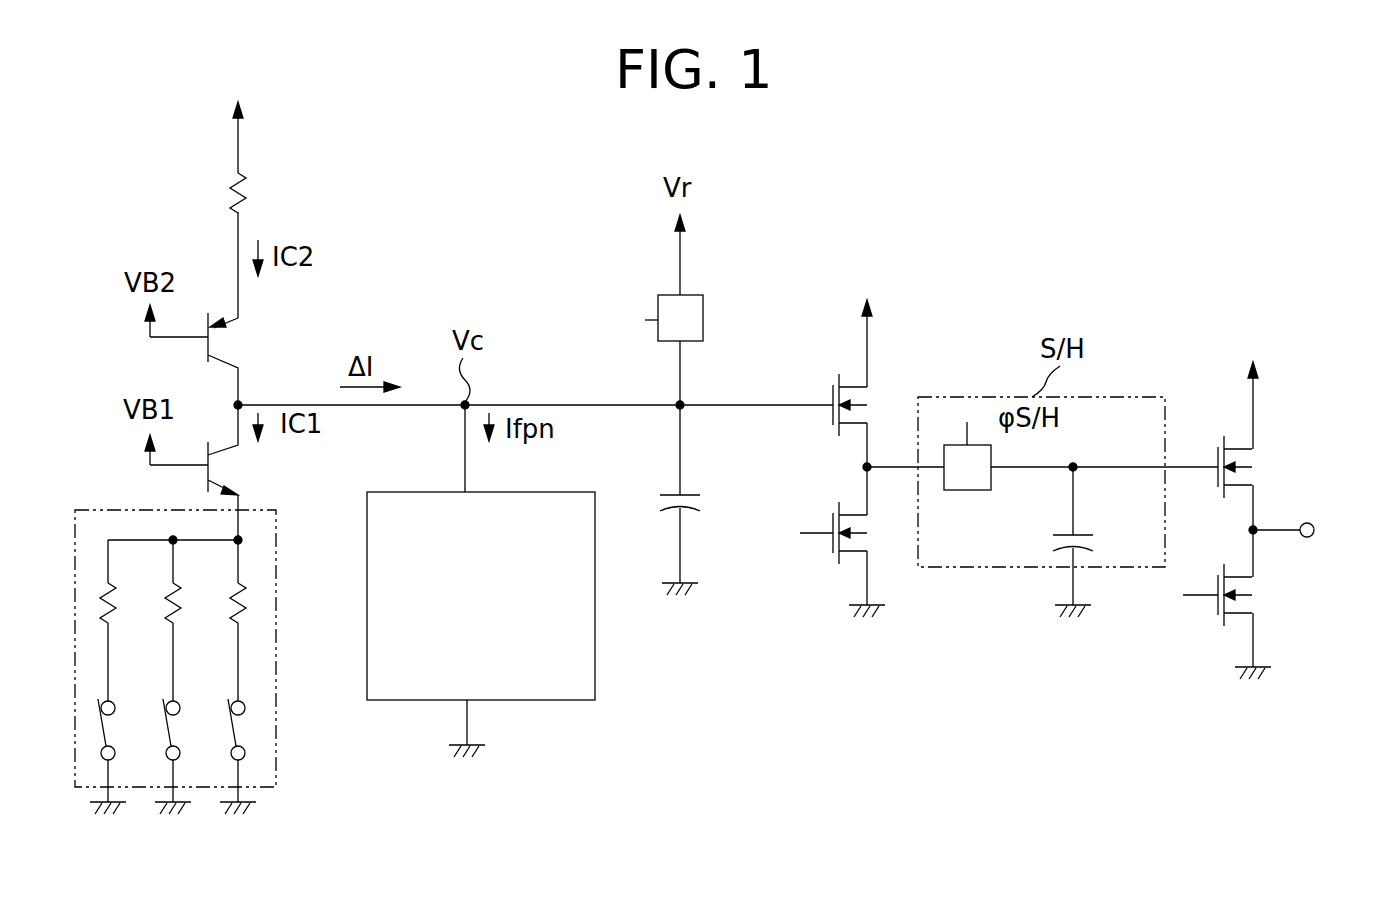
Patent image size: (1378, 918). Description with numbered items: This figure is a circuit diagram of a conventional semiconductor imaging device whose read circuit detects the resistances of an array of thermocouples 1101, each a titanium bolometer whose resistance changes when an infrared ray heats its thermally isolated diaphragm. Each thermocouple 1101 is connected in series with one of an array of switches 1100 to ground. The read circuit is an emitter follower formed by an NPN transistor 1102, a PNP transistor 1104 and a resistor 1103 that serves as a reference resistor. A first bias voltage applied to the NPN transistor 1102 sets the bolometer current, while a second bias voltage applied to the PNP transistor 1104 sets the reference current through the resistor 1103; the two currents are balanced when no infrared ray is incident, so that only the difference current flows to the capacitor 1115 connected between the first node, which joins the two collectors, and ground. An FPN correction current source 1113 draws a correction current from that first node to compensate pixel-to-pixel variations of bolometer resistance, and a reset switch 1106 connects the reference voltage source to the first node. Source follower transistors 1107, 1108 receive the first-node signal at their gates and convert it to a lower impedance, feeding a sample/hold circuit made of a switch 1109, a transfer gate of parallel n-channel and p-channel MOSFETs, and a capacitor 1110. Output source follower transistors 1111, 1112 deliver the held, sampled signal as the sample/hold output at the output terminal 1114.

The switches 1100 is at (246, 724).
The thermocouples 1101 is at (253, 633).
The NPN transistor 1102 is at (235, 472).
The resistor 1103 is at (250, 192).
The PNP transistor 1104 is at (235, 340).
The reset switch 1106 is at (703, 323).
The source follower transistor 1107 is at (883, 405).
The source follower transistor 1108 is at (877, 542).
The switch 1109 is at (967, 490).
The capacitor 1110 is at (1100, 540).
The output source follower transistor 1111 is at (1256, 457).
The output source follower transistor 1112 is at (1256, 603).
The FPN correction current source 1113 is at (595, 672).
The output terminal 1114 is at (1336, 497).
The capacitor 1115 is at (700, 503).